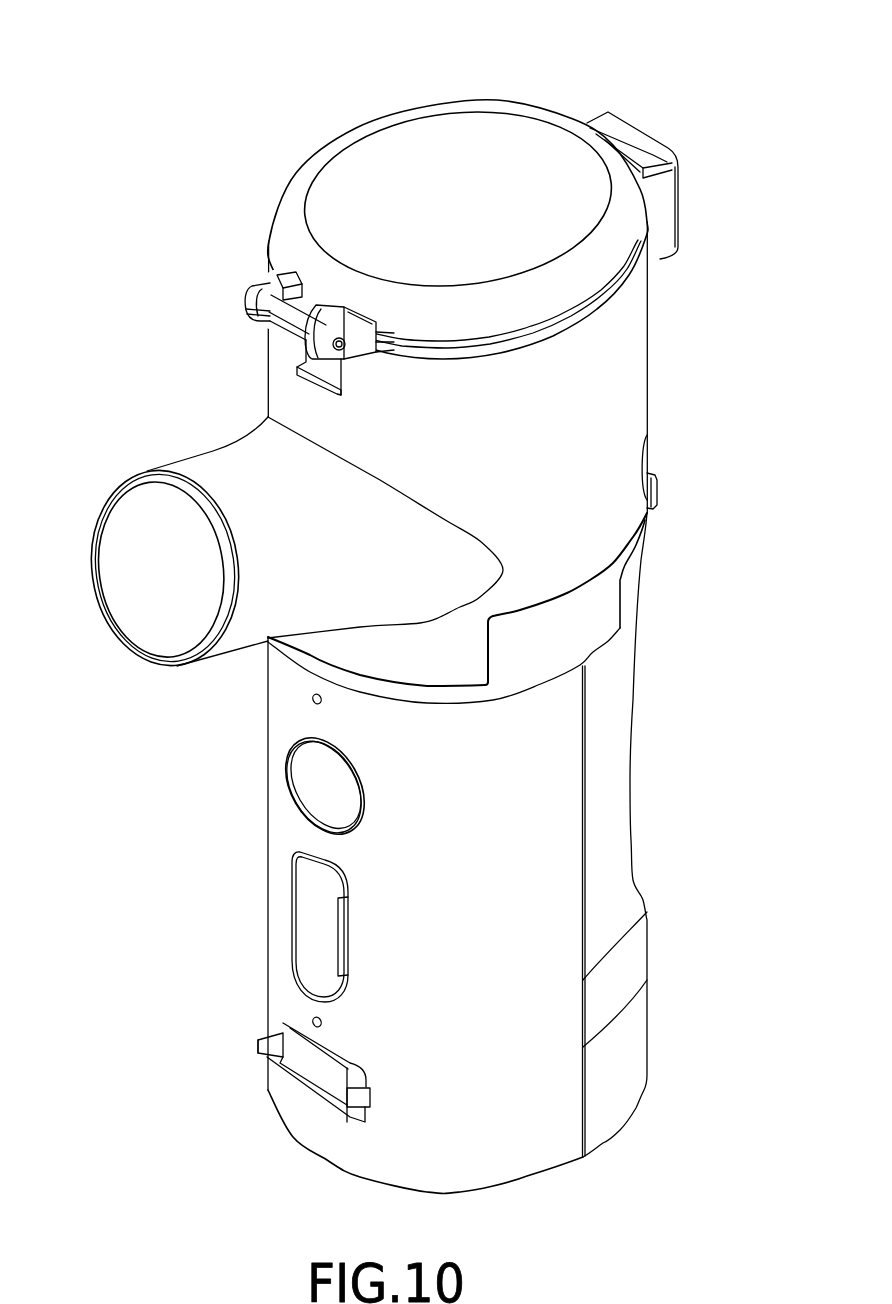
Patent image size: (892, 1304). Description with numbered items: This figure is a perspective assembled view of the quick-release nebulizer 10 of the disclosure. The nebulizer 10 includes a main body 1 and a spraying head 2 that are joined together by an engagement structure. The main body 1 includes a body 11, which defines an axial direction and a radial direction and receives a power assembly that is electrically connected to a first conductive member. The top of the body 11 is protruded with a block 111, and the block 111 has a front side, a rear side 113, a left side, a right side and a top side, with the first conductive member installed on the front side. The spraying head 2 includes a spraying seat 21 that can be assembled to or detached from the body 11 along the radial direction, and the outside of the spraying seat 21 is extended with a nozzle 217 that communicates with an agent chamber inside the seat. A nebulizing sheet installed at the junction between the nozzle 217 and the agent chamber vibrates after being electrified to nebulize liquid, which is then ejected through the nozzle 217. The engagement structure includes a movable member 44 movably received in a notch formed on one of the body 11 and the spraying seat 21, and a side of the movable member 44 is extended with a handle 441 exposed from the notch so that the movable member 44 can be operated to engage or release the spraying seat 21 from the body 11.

The nebulizer 10 is at (398, 29).
The main body 1 is at (648, 810).
The body 11 is at (618, 765).
The block 111 is at (666, 563).
The rear side 113 is at (637, 585).
The spraying head 2 is at (666, 377).
The spraying seat 21 is at (638, 332).
The nozzle 217 is at (217, 465).
The movable member 44 is at (674, 495).
The handle 441 is at (657, 487).